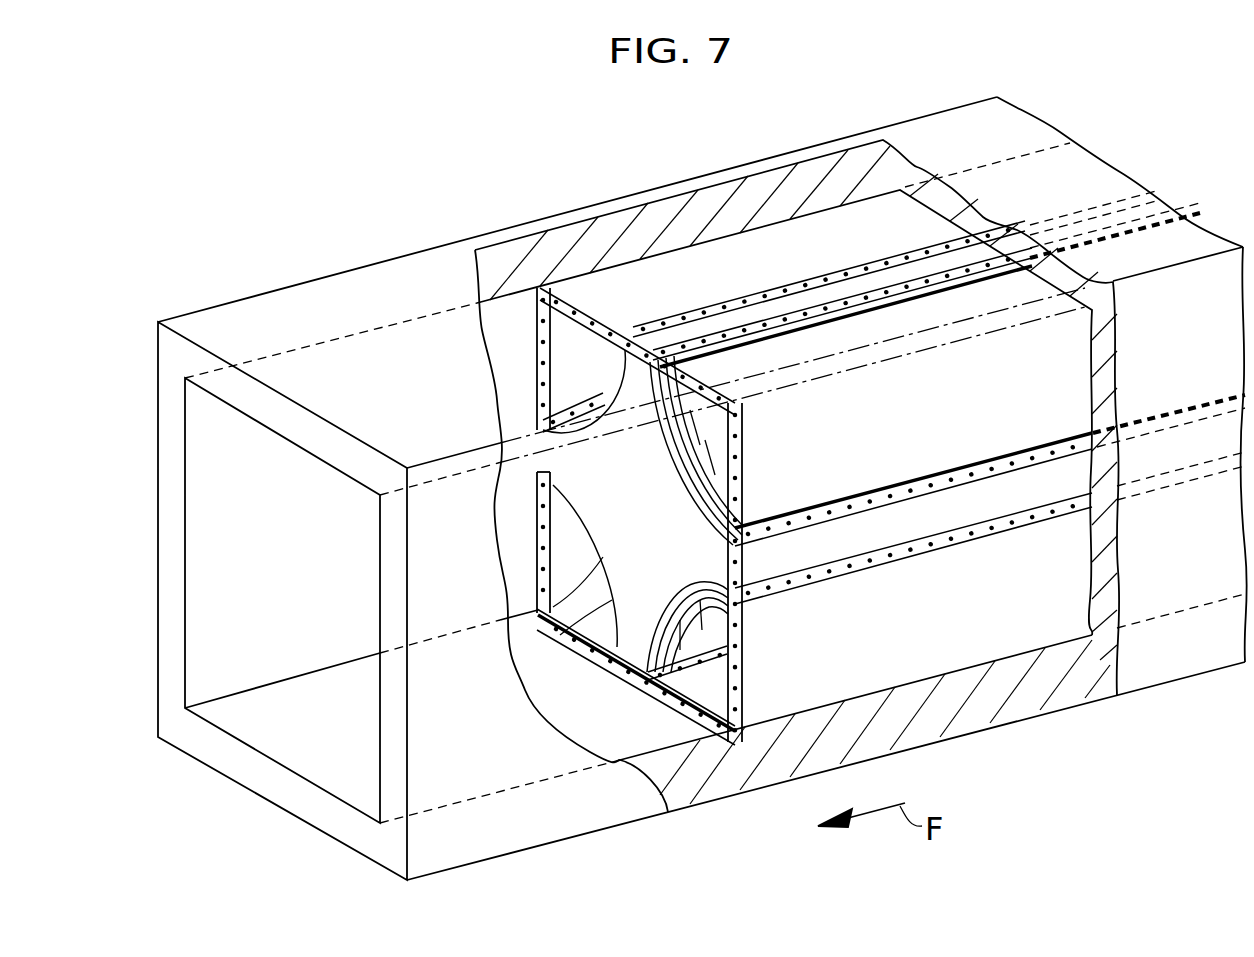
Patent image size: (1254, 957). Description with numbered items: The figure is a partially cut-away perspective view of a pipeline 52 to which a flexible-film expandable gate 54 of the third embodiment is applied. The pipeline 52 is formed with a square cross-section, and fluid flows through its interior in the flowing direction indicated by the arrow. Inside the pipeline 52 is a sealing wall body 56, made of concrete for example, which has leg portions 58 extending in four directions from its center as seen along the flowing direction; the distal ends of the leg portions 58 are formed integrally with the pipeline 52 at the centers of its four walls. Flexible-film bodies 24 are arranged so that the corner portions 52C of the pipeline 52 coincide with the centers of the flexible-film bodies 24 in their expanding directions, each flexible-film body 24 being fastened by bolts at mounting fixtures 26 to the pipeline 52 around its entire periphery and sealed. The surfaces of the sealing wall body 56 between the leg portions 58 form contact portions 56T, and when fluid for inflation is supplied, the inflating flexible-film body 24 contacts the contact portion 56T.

The pipeline 52 is at (268, 780).
The corner portions 52C is at (178, 354).
The flexible-film expandable gate 54 is at (514, 320).
The mounting fixtures 26 is at (540, 341).
The flexible-film body 24 is at (540, 400).
The leg portions 58 is at (633, 367).
The sealing wall body 56 is at (605, 632).
The contact portions 56T is at (617, 378).